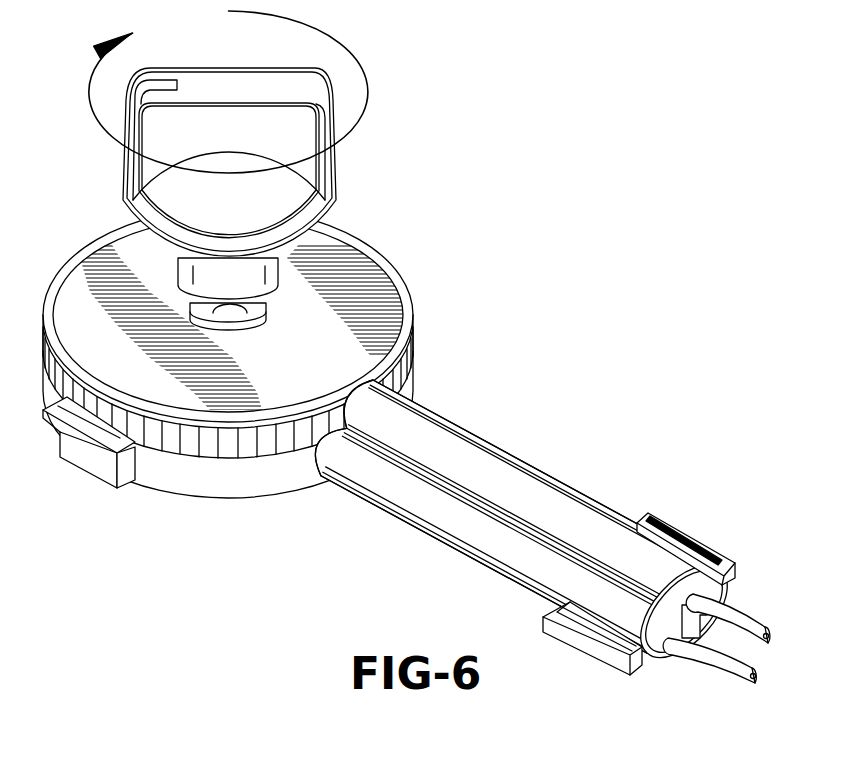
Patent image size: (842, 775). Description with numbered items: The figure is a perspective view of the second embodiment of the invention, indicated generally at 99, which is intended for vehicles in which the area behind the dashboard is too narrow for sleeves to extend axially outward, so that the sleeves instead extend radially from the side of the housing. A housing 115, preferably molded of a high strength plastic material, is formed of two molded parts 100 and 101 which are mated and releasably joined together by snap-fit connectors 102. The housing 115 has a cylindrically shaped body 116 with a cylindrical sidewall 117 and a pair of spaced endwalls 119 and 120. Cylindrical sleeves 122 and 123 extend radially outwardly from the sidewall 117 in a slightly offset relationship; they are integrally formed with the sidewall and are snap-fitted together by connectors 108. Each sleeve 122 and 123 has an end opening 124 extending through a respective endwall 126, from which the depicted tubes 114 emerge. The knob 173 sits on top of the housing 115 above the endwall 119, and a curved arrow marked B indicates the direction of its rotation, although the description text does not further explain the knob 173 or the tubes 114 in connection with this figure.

The second embodiment 99 is at (429, 375).
The molded part 100 is at (185, 480).
The molded part 101 is at (237, 450).
The snap-fit connectors 102 is at (90, 465).
The connectors 108 is at (605, 630).
The tubes 114 is at (737, 618).
The housing 115 is at (396, 258).
The cylindrically shaped body 116 is at (400, 289).
The cylindrical sidewall 117 is at (170, 447).
The endwall 119 is at (342, 247).
The endwall 120 is at (313, 490).
The cylindrical sleeve 122 is at (500, 468).
The cylindrical sleeve 123 is at (480, 540).
The end opening 124 is at (673, 643).
The endwall 126 is at (700, 580).
The knob 173 is at (323, 195).